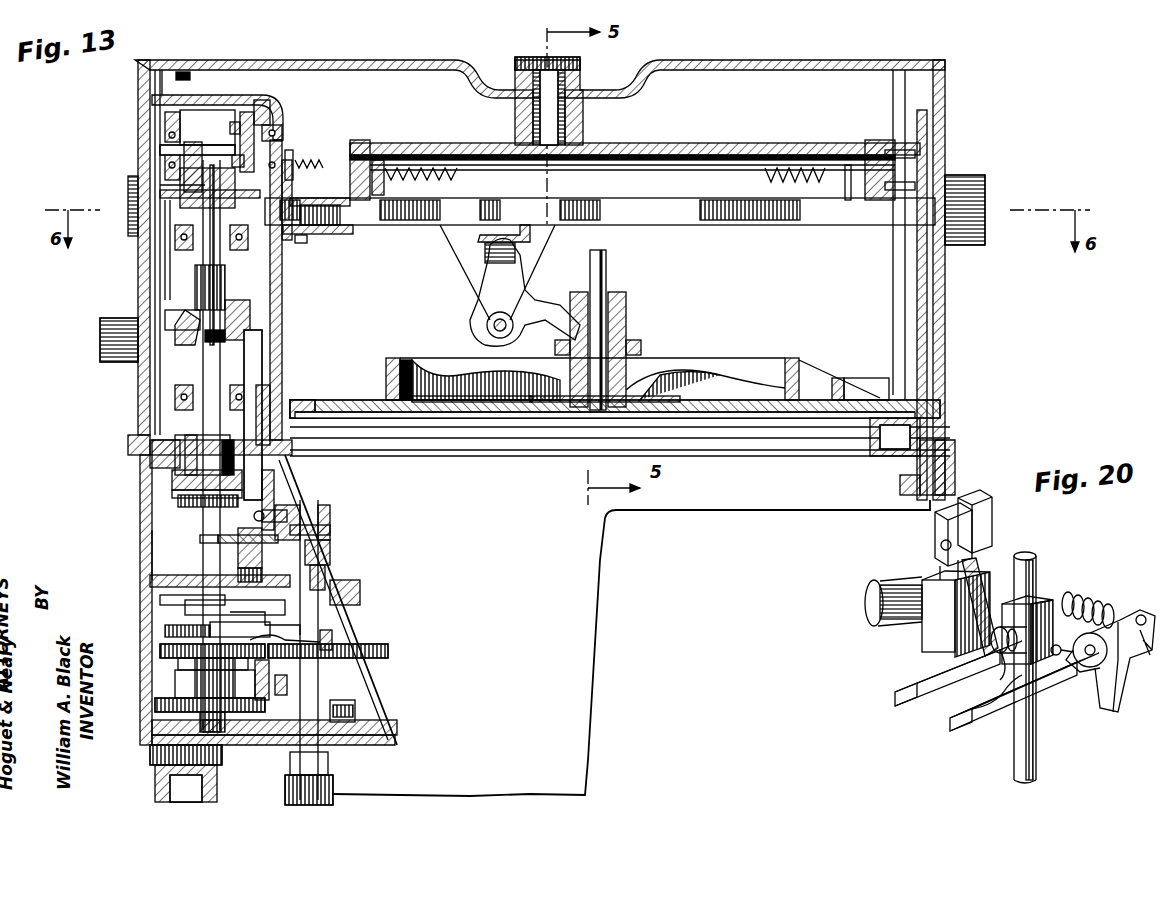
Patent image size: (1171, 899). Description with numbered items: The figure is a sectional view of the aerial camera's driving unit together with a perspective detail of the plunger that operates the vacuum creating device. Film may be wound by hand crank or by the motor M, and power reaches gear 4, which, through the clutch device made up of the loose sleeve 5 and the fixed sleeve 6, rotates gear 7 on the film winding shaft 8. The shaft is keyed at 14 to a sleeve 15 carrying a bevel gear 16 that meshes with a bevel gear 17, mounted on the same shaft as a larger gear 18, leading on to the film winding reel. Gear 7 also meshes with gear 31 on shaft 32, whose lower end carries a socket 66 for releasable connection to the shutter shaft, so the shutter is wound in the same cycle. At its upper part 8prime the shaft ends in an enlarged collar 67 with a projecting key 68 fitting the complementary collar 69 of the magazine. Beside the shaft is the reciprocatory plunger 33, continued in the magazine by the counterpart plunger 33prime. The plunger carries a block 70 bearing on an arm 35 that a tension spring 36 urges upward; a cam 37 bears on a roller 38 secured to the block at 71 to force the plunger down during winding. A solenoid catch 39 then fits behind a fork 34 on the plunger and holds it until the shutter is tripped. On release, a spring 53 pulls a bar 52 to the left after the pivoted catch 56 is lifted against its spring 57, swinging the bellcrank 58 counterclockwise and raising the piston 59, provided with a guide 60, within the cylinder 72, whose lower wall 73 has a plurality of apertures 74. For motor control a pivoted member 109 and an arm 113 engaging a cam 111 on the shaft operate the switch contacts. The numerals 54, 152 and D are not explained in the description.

In FIG. 13, the motor M is at (948, 78).
In FIG. 13, the gear 4 is at (178, 702).
In FIG. 13, the sleeve 5 is at (180, 676).
In FIG. 13, the sleeve 6 is at (180, 660).
In FIG. 13, the gear 7 is at (178, 650).
In FIG. 13, the film winding shaft 8 is at (210, 565).
In FIG. 13, the upper part of shaft 8prime is at (205, 315).
In FIG. 13, the key 14 is at (200, 190).
In FIG. 13, the sleeve 15 is at (205, 190).
In FIG. 13, the bevel gear 16 is at (195, 160).
In FIG. 13, the bevel gear 17 is at (228, 130).
In FIG. 13, the larger gear 18 is at (270, 100).
In FIG. 13, the gear 31 is at (365, 650).
In FIG. 13, the shaft 32 is at (320, 715).
In FIG. 13, the reciprocatory plunger 33 is at (265, 505).
In FIG. 20, the reciprocatory plunger 33 is at (1038, 560).
In FIG. 13, the plunger counterpart 33prime is at (255, 388).
In FIG. 13, the fork 34 is at (242, 555).
In FIG. 20, the fork 34 is at (910, 680).
In FIG. 20, the arm 35 is at (1105, 630).
In FIG. 20, the tension spring 36 is at (1098, 603).
In FIG. 13, the cam 37 is at (205, 500).
In FIG. 13, the roller 38 is at (262, 522).
In FIG. 20, the roller 38 is at (975, 708).
In FIG. 20, the solenoid catch 39 is at (985, 600).
In FIG. 13, the bar 52 is at (655, 212).
In FIG. 13, the spring 53 is at (815, 150).
In FIG. 13, the bracket 54 is at (290, 222).
In FIG. 13, the pivoted catch 56 is at (330, 205).
In FIG. 13, the spring 57 is at (300, 172).
In FIG. 13, the bellcrank 58 is at (505, 295).
In FIG. 13, the piston 59 is at (658, 380).
In FIG. 13, the guide 60 is at (608, 270).
In FIG. 13, the socket 66 is at (338, 792).
In FIG. 13, the enlarged collar 67 is at (210, 475).
In FIG. 13, the projecting key 68 is at (195, 465).
In FIG. 13, the complementary collar 69 is at (193, 445).
In FIG. 13, the block 70 is at (295, 515).
In FIG. 20, the block 70 is at (1058, 646).
In FIG. 13, the securing point 71 is at (305, 530).
In FIG. 13, the cylinder 72 is at (798, 360).
In FIG. 13, the lower wall 73 is at (436, 425).
In FIG. 13, the apertures 74 is at (505, 425).
In FIG. 13, the pivoted member 109 is at (296, 622).
In FIG. 13, the cam 111 is at (170, 636).
In FIG. 13, the arm 113 is at (335, 640).
In FIG. 13, the rod 152 is at (175, 268).
In FIG. 13, the direction D is at (140, 553).